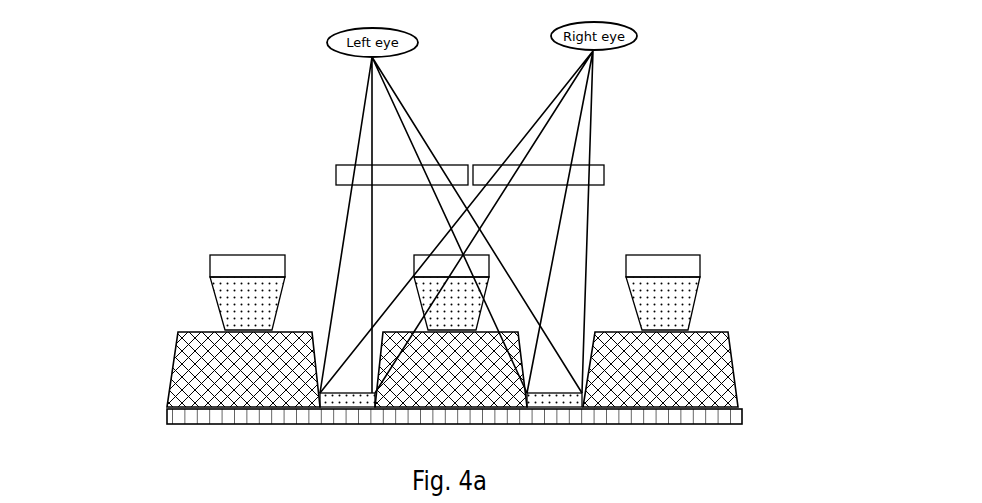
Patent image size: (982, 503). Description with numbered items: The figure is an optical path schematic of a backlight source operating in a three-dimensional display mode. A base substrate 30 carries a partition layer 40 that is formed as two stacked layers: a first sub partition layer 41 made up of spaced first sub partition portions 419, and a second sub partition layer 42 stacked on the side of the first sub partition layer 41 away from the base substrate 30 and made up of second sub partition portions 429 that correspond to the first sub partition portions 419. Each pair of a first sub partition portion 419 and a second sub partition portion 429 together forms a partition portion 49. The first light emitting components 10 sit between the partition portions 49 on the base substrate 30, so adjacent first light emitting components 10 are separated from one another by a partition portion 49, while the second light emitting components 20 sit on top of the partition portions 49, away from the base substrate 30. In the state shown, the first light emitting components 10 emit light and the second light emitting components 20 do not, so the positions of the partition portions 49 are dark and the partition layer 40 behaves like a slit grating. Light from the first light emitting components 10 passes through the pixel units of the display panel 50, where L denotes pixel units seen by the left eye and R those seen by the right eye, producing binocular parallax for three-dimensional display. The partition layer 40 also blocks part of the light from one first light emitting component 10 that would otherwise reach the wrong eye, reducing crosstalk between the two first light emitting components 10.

The first light emitting component 10 is at (738, 401).
The second light emitting component 20 is at (242, 262).
The base substrate 30 is at (203, 418).
The partition layer 40 is at (174, 342).
The first sub partition layer 41 is at (171, 378).
The second sub partition layer 42 is at (217, 305).
The partition portion 49 is at (728, 342).
The first sub partition portion 419 is at (670, 378).
The second sub partition portion 429 is at (670, 307).
The display panel 50 is at (334, 175).